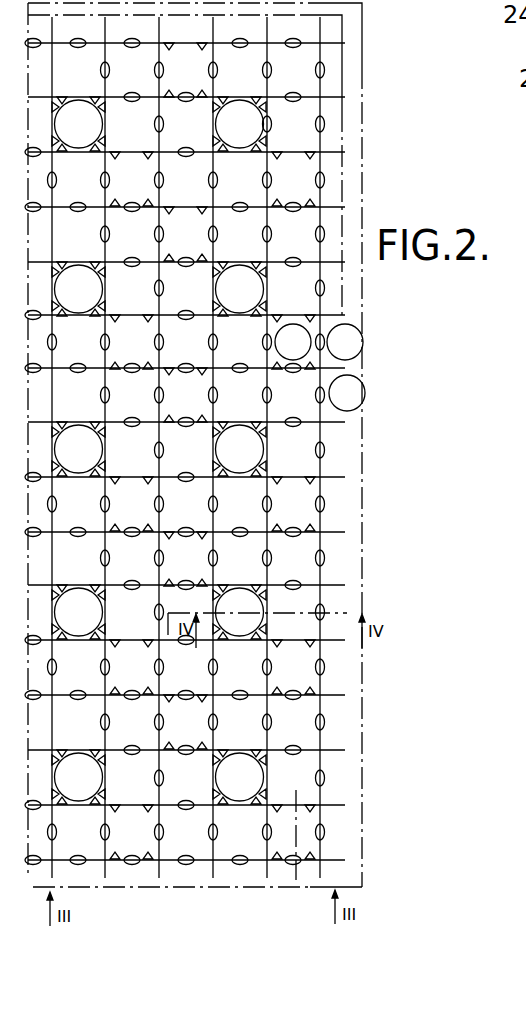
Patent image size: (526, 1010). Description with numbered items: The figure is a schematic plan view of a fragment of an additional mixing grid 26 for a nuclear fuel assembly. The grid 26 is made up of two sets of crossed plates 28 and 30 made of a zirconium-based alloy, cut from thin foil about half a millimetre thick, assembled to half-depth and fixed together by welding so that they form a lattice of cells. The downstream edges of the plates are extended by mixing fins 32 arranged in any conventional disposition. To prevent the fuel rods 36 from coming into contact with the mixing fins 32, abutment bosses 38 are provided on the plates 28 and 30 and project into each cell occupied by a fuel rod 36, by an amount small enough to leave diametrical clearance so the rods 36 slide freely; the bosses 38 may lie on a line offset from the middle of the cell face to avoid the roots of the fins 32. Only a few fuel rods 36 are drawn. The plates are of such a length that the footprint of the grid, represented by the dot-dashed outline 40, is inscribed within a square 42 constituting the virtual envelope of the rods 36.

The grid 26 is at (228, 447).
The crossed plates 28 is at (318, 142).
The crossed plates 30 is at (343, 477).
The mixing fins 32 is at (315, 215).
The fuel rods 36 is at (362, 375).
The abutment bosses 38 is at (327, 773).
The dot-dashed outline 40 is at (342, 65).
The square 42 is at (352, 121).